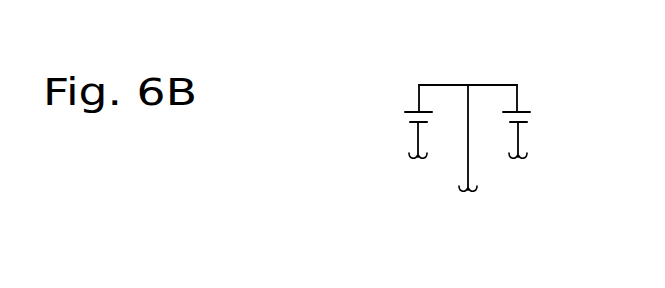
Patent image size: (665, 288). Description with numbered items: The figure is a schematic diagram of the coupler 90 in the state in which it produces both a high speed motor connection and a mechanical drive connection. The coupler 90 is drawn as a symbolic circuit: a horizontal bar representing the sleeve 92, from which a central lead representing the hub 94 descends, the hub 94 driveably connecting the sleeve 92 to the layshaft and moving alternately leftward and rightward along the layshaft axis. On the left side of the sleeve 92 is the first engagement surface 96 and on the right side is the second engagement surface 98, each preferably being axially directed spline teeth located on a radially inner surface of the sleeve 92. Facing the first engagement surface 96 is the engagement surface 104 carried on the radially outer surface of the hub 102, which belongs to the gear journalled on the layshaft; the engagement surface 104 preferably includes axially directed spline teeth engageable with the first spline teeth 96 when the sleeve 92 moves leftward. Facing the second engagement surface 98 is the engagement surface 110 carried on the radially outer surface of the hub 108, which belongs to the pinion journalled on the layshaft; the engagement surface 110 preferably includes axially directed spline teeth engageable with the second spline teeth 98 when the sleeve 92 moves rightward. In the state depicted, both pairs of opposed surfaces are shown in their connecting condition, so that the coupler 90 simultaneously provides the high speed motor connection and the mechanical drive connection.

The coupler 90 is at (424, 71).
The sleeve 92 is at (487, 85).
The hub 94 is at (470, 170).
The first engagement surface 96 is at (421, 111).
The second engagement surface 98 is at (516, 108).
The hub 102 is at (418, 142).
The engagement surface 104 is at (414, 124).
The hub 108 is at (519, 143).
The engagement surface 110 is at (527, 122).